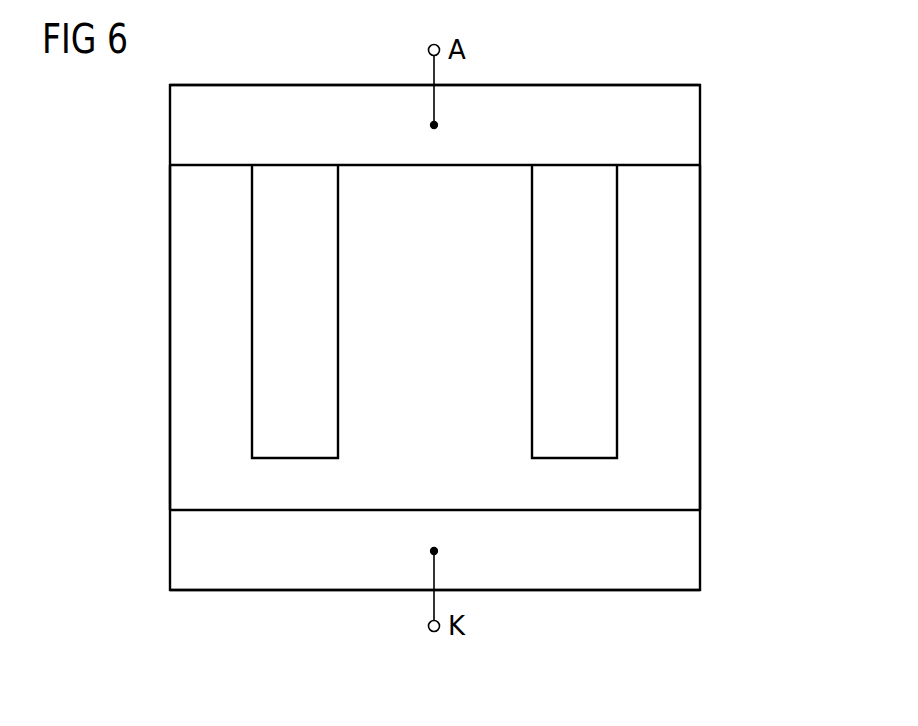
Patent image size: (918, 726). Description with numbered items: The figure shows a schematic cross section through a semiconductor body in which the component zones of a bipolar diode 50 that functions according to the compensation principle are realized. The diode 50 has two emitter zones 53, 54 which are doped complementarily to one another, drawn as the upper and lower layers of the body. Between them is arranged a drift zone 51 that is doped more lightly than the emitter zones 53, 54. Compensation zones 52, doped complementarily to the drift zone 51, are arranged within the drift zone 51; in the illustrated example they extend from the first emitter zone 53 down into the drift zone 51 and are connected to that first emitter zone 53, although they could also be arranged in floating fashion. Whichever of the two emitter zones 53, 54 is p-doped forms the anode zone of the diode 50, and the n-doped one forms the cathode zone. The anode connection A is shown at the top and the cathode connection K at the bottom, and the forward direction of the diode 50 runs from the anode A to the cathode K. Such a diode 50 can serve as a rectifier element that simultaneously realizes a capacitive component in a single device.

The bipolar diode 50 is at (762, 232).
The drift zone 51 is at (685, 377).
The compensation zones 52 is at (602, 313).
The first emitter zone 53 is at (685, 128).
The second emitter zone 54 is at (685, 550).